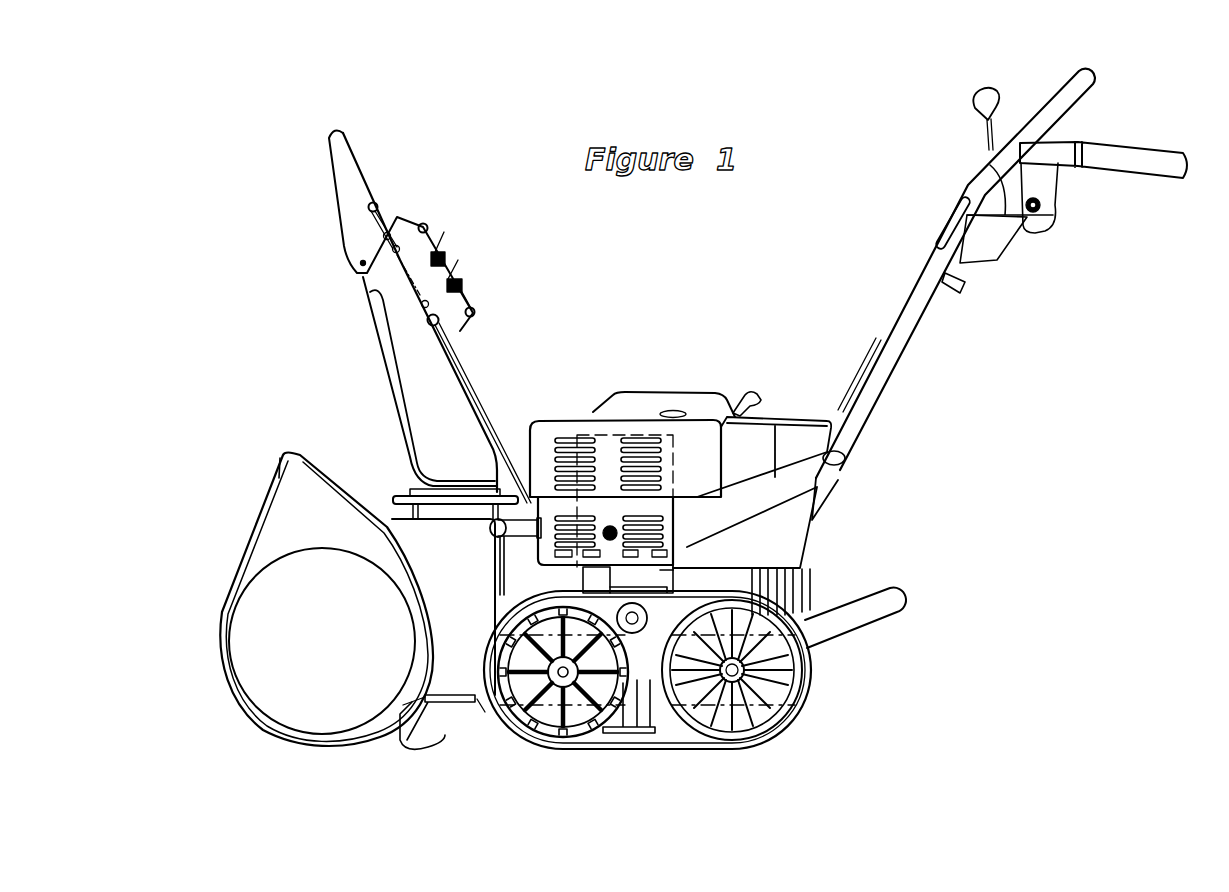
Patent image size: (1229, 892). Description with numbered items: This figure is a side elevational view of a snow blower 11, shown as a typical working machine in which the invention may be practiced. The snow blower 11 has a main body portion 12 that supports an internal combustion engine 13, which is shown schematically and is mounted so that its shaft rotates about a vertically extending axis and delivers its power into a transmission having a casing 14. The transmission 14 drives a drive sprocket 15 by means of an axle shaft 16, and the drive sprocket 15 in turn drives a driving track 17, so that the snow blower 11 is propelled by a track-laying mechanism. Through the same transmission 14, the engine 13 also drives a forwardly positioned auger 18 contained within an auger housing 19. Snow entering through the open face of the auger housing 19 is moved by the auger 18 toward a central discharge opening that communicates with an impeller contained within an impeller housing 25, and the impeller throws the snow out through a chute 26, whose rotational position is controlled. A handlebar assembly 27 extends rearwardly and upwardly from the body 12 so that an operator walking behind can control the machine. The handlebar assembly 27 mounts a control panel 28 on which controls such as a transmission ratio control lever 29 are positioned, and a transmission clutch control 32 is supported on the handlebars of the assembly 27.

The snow blower 11 is at (738, 348).
The main body portion 12 is at (660, 693).
The internal combustion engine 13 is at (677, 463).
The transmission casing 14 is at (672, 612).
The drive sprocket 15 is at (543, 730).
The axle shaft 16 is at (503, 647).
The driving track 17 is at (642, 748).
The auger 18 is at (278, 731).
The auger housing 19 is at (350, 480).
The impeller housing 25 is at (450, 667).
The chute 26 is at (410, 350).
The handlebar assembly 27 is at (1143, 173).
The control panel 28 is at (958, 197).
The transmission ratio control lever 29 is at (977, 90).
The transmission clutch control 32 is at (1057, 108).